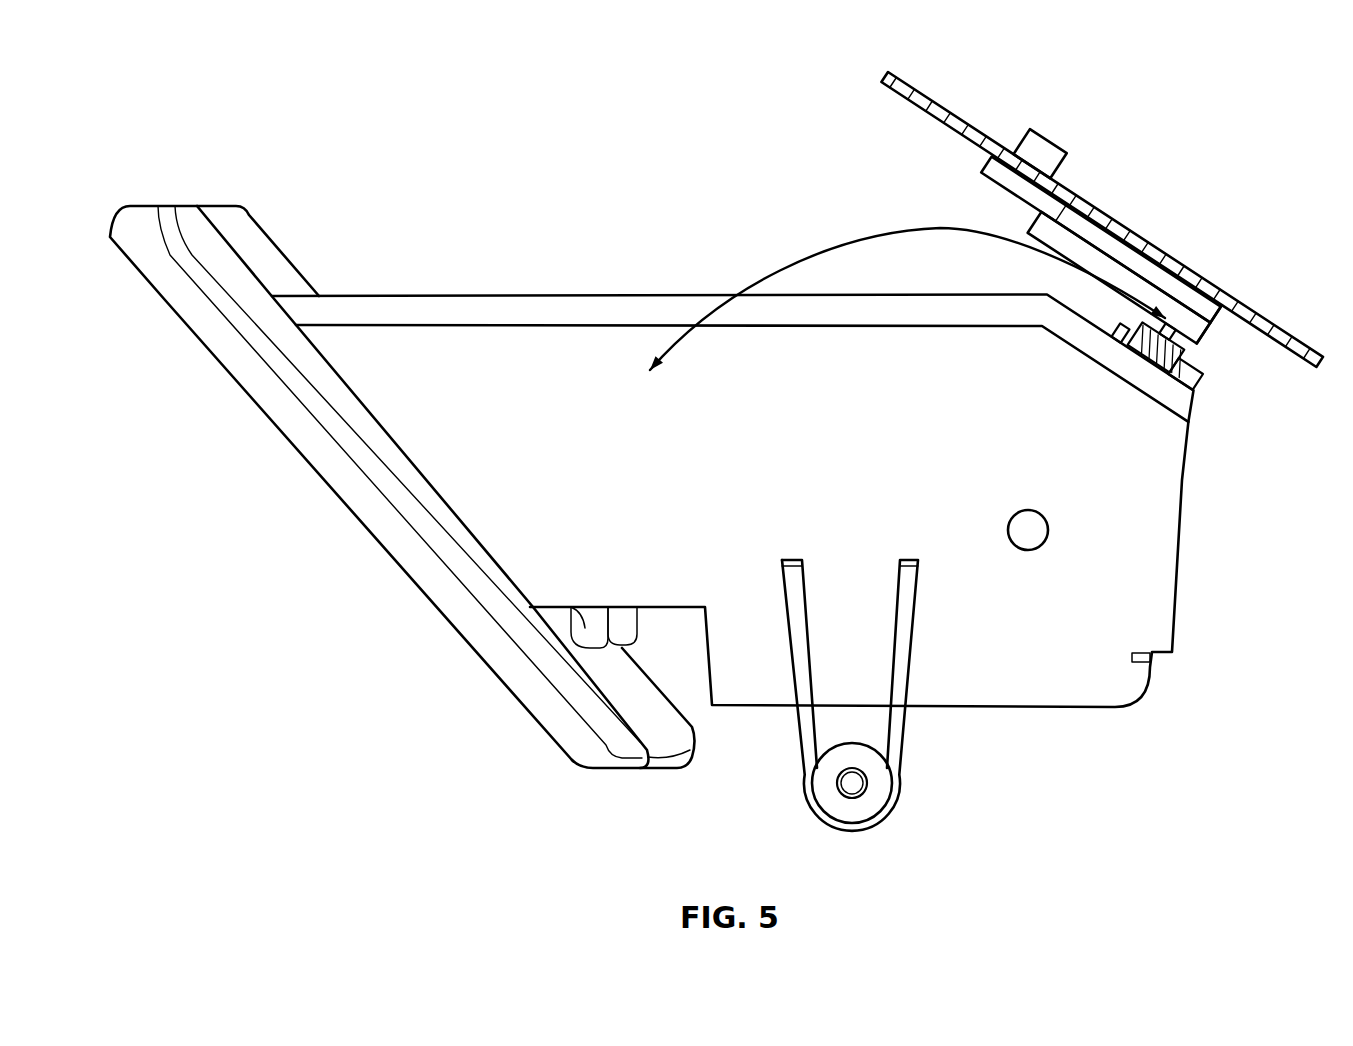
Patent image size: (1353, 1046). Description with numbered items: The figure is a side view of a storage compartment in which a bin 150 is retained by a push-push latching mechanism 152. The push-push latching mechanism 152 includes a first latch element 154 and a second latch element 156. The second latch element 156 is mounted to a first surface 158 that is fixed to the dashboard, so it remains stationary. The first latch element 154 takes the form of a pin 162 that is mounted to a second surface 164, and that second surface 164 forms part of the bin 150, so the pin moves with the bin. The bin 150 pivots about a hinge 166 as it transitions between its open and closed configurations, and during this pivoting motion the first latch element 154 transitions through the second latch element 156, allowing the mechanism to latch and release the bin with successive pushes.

The bin 150 is at (135, 123).
The push-push latching mechanism 152 is at (1231, 373).
The first latch element 154 is at (1190, 392).
The second latch element 156 is at (1000, 185).
The first surface 158 is at (1302, 358).
The pin 162 is at (1158, 322).
The second surface 164 is at (1064, 298).
The hinge 166 is at (857, 788).